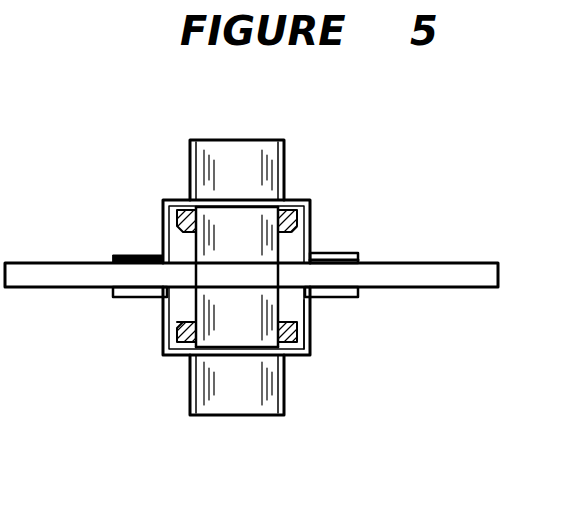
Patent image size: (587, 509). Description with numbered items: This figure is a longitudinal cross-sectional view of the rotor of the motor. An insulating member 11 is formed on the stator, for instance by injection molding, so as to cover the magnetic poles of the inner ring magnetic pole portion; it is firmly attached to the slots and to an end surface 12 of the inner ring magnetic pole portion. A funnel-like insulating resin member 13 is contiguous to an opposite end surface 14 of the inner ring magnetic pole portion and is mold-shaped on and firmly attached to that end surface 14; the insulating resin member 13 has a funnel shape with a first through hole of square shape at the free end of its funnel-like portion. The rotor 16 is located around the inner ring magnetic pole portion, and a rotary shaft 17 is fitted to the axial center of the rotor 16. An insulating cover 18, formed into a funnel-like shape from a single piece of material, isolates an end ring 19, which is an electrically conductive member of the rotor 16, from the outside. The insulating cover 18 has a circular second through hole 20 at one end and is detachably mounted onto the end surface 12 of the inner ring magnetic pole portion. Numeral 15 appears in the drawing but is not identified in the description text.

The insulating member 11 is at (283, 160).
The end surface 12 is at (280, 392).
The insulating resin member 13 is at (170, 325).
The end surface 14 is at (193, 190).
The lower flange 15 is at (118, 296).
The rotor 16 is at (270, 255).
The rotary shaft 17 is at (438, 272).
The insulating cover 18 is at (308, 323).
The end ring 19 is at (163, 212).
The second through hole 20 is at (358, 297).